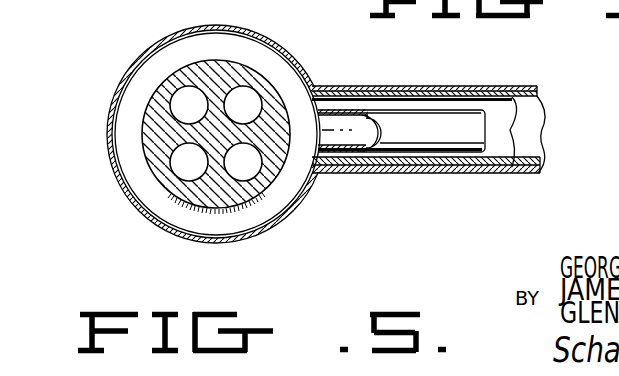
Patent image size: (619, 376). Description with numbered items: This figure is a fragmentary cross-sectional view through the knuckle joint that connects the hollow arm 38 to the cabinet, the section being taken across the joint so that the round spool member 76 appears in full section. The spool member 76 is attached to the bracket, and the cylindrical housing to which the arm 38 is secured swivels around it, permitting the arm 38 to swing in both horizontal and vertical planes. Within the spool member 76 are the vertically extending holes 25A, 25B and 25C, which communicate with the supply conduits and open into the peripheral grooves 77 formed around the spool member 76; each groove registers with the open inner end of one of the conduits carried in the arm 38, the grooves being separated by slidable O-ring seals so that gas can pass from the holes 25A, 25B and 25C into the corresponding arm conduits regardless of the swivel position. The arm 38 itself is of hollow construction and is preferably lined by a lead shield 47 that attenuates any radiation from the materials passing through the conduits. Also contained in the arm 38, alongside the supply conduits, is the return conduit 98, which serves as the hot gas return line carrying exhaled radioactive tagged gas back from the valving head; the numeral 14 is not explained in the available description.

The end cap 14 is at (172, 32).
The peripheral grooves 77 is at (238, 50).
The spool member 76 is at (152, 125).
The vertically extending hole 25A is at (247, 172).
The vertically extending hole 25B is at (182, 97).
The vertically extending hole 25C is at (179, 155).
The arm 38 is at (485, 88).
The return conduit 98 is at (439, 112).
The lead shield 47 is at (514, 113).